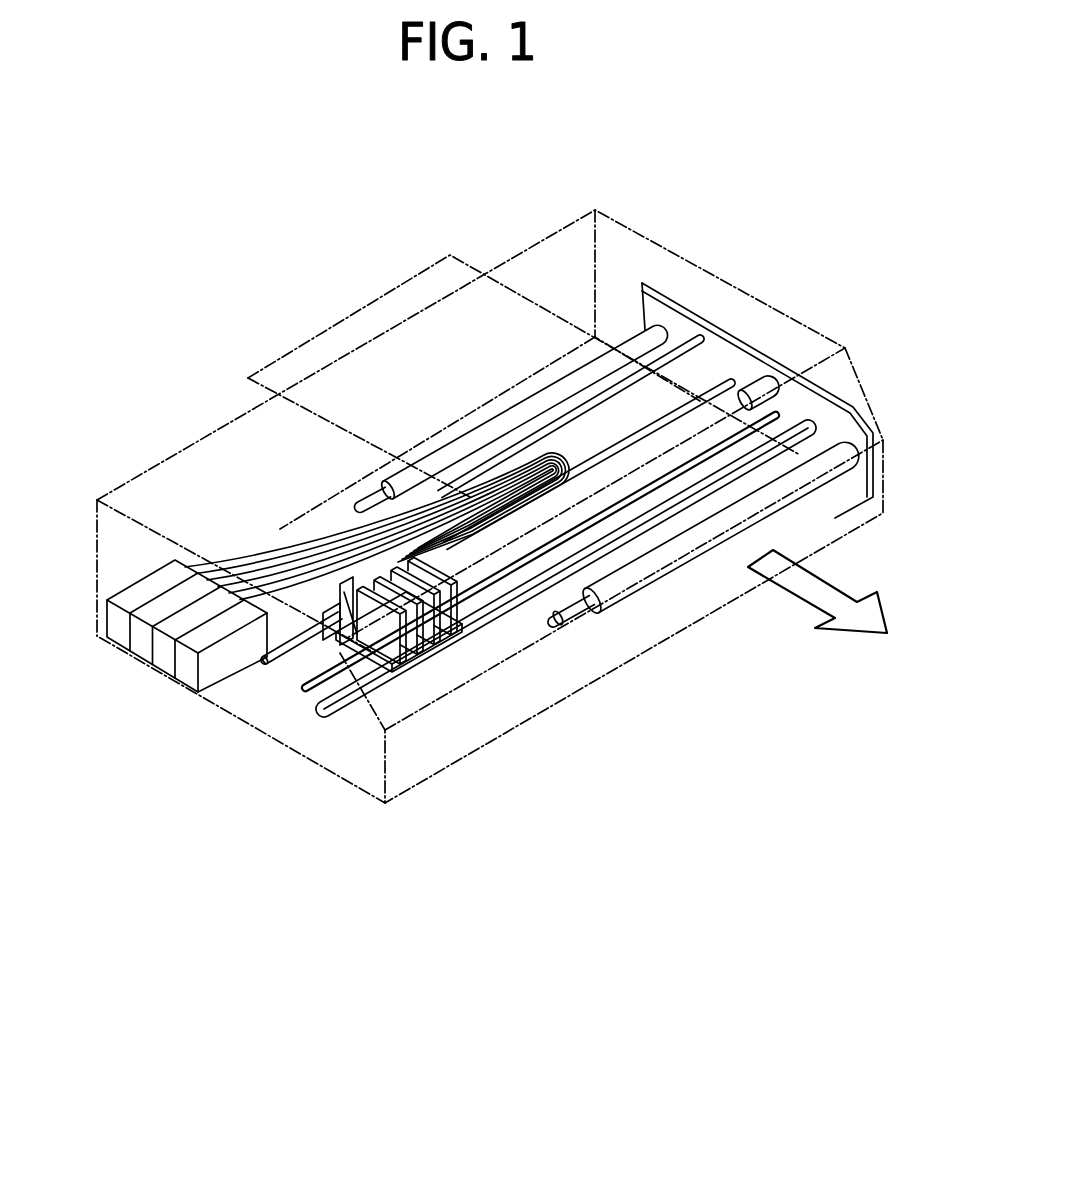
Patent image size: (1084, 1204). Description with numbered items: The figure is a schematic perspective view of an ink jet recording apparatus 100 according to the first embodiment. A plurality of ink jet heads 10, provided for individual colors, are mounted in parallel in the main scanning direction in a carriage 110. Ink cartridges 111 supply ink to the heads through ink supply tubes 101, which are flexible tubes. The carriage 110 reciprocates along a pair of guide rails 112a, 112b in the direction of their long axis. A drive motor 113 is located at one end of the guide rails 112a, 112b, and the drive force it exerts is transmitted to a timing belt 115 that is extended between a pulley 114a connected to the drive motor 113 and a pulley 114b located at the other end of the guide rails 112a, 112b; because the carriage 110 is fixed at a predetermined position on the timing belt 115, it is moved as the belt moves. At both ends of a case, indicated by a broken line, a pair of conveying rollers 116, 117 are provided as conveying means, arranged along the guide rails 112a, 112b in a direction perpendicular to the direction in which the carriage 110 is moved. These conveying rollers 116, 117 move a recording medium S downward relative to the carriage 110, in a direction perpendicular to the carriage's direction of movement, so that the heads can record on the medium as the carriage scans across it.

The ink jet recording apparatus 100 is at (506, 594).
The ink supply tubes 101 is at (265, 556).
The ink jet heads 10 is at (440, 643).
The carriage 110 is at (360, 592).
The ink cartridges 111 is at (120, 630).
The guide rail 112a is at (267, 666).
The guide rail 112b is at (647, 533).
The drive motor 113 is at (752, 392).
The pulley 114a is at (797, 407).
The pulley 114b is at (302, 692).
The timing belt 115 is at (692, 458).
The conveying roller 116 is at (628, 348).
The conveying roller 117 is at (600, 592).
The recording medium S is at (425, 272).